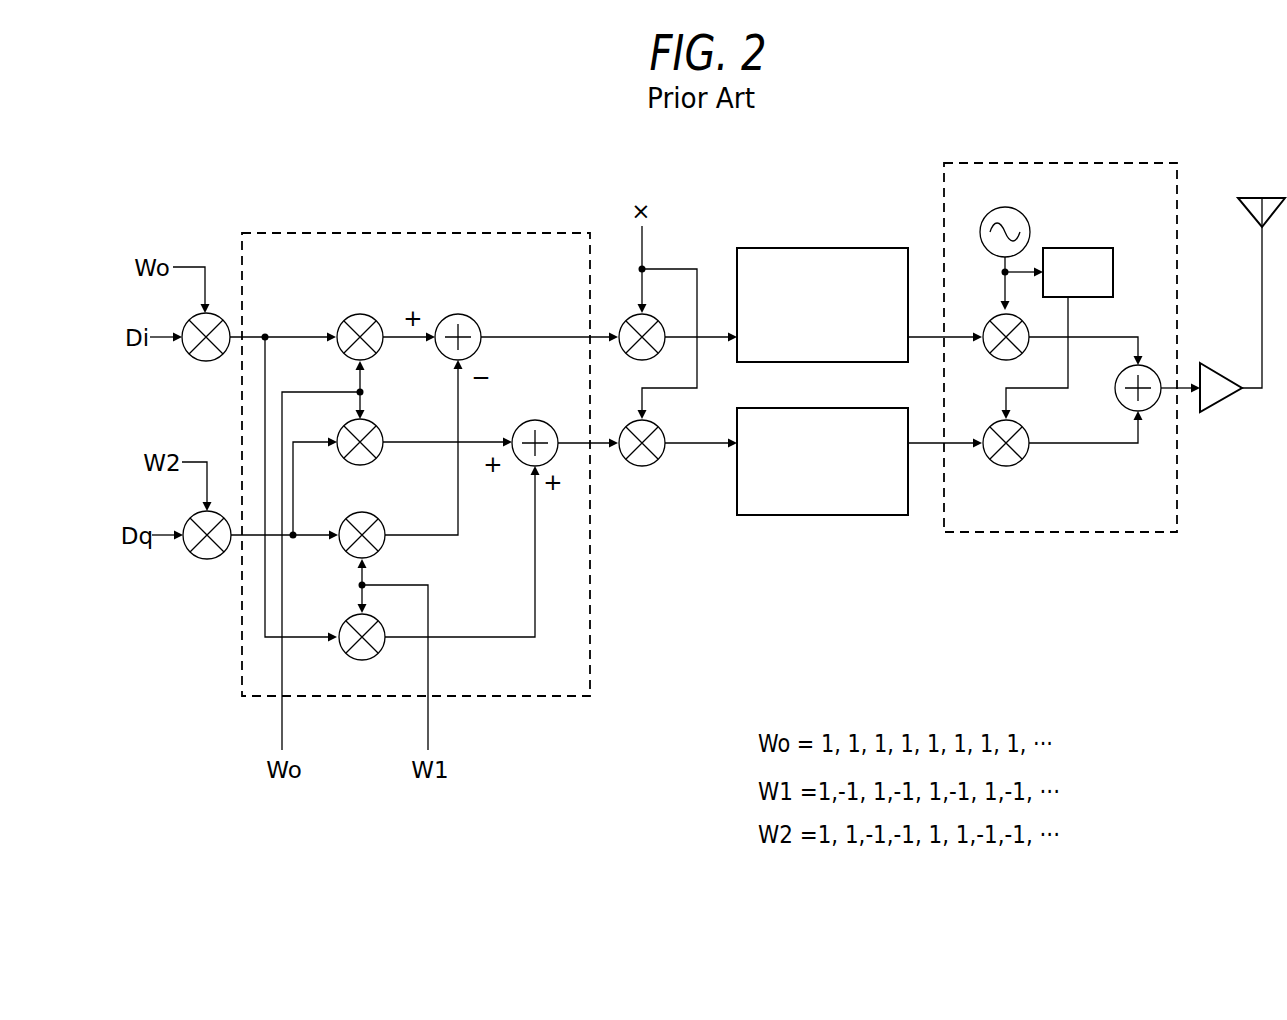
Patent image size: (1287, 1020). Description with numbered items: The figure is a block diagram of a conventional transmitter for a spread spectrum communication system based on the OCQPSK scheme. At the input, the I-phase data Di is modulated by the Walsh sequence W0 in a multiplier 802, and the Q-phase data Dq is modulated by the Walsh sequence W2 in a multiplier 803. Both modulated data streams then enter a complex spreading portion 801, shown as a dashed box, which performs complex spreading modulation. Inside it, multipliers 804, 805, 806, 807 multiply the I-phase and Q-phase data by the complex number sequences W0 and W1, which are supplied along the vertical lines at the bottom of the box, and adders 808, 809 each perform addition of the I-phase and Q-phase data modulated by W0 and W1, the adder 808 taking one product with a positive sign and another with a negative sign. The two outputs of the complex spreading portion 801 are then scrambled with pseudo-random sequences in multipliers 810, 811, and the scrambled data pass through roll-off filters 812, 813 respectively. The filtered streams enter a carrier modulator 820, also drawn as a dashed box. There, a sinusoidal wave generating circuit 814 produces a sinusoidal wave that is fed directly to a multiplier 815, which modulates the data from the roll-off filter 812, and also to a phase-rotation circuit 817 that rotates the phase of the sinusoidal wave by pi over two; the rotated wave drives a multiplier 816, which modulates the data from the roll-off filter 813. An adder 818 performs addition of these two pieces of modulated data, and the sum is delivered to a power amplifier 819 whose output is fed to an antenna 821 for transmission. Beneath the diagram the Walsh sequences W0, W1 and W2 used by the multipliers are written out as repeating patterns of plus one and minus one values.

The complex spreading portion 801 is at (278, 233).
The multiplier 802 is at (221, 312).
The multiplier 803 is at (222, 510).
The multiplier 804 is at (354, 313).
The multiplier 805 is at (375, 426).
The multiplier 806 is at (378, 519).
The multiplier 807 is at (372, 657).
The adder 808 is at (474, 317).
The adder 809 is at (538, 420).
The multiplier 810 is at (660, 316).
The multiplier 811 is at (652, 464).
The roll-off filter 812 is at (812, 248).
The roll-off filter 813 is at (818, 515).
The sinusoidal wave generating circuit 814 is at (987, 218).
The multiplier 815 is at (991, 351).
The multiplier 816 is at (994, 461).
The phase-rotation circuit 817 is at (1090, 248).
The adder 818 is at (1150, 362).
The power amplifier 819 is at (1218, 372).
The carrier modulator 820 is at (955, 533).
The antenna 821 is at (1248, 220).